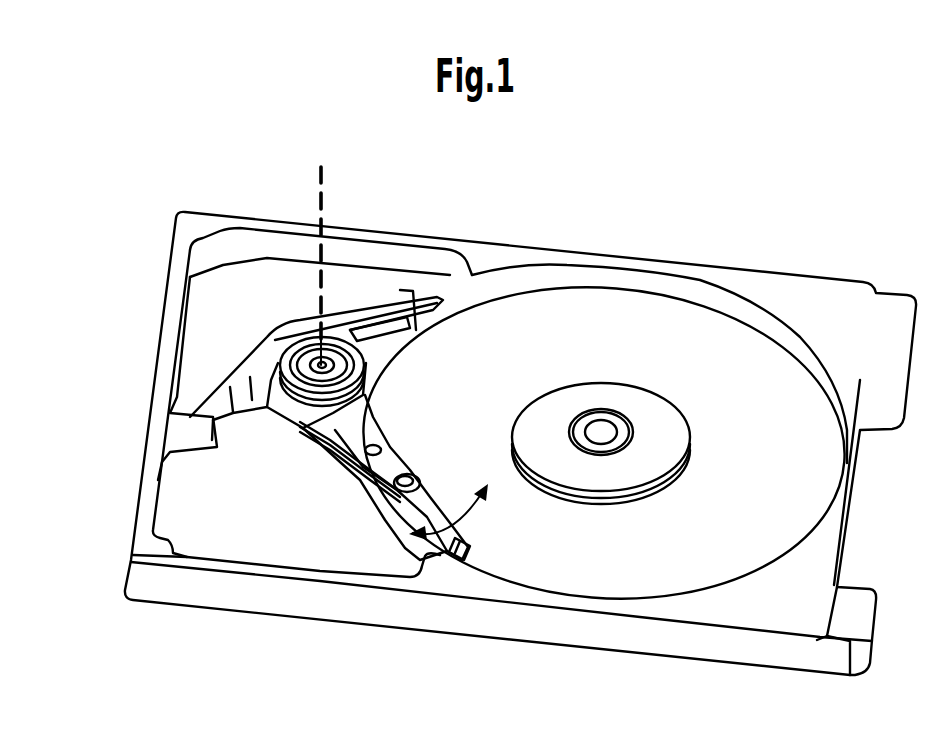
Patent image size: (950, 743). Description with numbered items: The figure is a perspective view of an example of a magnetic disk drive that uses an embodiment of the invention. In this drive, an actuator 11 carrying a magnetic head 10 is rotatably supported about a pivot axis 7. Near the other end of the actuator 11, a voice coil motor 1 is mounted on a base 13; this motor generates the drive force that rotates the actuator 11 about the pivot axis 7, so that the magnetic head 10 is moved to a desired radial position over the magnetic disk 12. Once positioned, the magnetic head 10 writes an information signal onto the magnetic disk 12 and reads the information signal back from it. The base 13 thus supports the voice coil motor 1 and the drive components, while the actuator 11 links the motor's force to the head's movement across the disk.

The voice coil motor 1 is at (210, 347).
The pivot axis 7 is at (327, 212).
The magnetic head 10 is at (463, 543).
The actuator 11 is at (353, 427).
The magnetic disk 12 is at (670, 360).
The base 13 is at (137, 580).